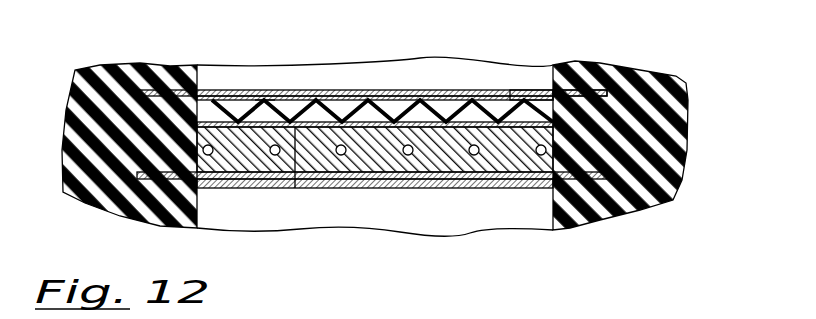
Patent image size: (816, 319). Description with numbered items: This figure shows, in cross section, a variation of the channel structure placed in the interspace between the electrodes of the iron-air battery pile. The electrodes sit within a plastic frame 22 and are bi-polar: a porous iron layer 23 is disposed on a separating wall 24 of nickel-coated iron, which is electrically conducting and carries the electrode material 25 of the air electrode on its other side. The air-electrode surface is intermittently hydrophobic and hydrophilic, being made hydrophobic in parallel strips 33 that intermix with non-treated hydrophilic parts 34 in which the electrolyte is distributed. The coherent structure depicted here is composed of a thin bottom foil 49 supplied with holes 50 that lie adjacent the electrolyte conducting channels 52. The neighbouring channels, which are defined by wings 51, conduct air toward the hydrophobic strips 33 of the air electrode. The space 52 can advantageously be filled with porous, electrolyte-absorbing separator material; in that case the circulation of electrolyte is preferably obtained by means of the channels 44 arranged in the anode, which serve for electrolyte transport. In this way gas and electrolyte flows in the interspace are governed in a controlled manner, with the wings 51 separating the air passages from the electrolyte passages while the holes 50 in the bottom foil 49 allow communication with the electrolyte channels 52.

The plastic frame 22 is at (675, 138).
The porous iron layer 23 is at (468, 152).
The separating wall 24 is at (687, 91).
The electrode material of the air electrode 25 is at (522, 92).
The hydrophobic strips 33 is at (320, 102).
The hydrophilic parts 34 is at (405, 97).
The channels in the anode 44 is at (479, 135).
The thin bottom foil 49 is at (295, 188).
The holes 50 is at (268, 127).
The wings 51 is at (255, 103).
The electrolyte conducting channels 52 is at (266, 112).